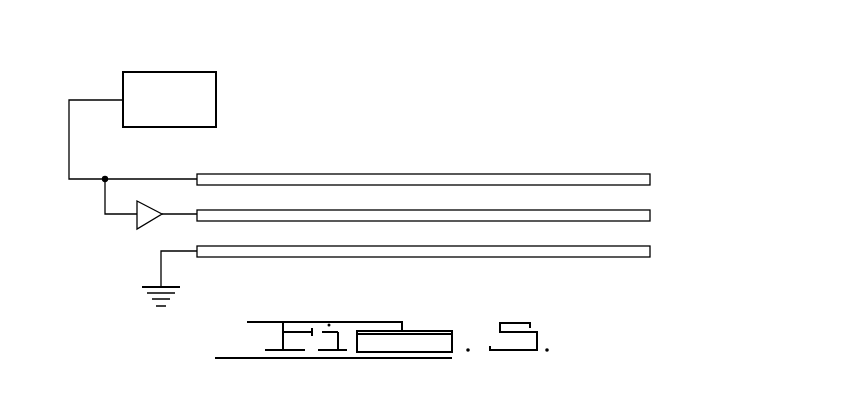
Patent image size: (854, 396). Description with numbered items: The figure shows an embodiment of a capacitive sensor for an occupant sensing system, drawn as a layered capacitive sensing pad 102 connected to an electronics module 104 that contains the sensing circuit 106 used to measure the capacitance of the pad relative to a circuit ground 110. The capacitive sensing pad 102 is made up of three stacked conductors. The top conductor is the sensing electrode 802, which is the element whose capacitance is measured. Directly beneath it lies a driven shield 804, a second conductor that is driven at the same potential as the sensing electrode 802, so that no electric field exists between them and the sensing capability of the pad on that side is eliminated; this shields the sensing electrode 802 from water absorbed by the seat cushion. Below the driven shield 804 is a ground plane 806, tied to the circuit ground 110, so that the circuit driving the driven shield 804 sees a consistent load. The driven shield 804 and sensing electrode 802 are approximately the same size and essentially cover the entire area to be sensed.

The capacitive sensing pad 102 is at (508, 198).
The electronics module 104 is at (158, 128).
The sensing circuit 106 is at (172, 85).
The circuit ground 110 is at (161, 268).
The sensing electrode 802 is at (390, 173).
The driven shield 804 is at (640, 209).
The ground plane 806 is at (457, 241).